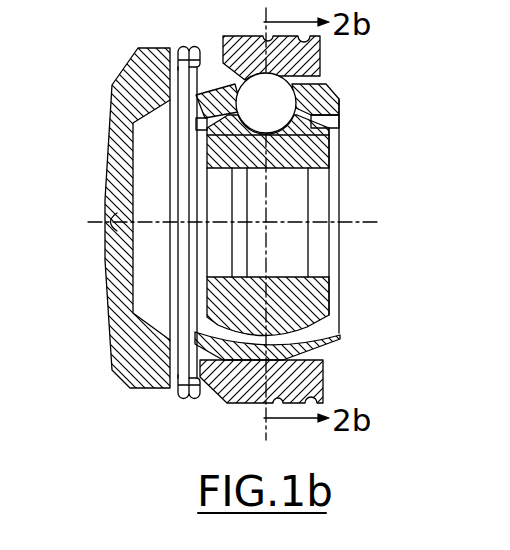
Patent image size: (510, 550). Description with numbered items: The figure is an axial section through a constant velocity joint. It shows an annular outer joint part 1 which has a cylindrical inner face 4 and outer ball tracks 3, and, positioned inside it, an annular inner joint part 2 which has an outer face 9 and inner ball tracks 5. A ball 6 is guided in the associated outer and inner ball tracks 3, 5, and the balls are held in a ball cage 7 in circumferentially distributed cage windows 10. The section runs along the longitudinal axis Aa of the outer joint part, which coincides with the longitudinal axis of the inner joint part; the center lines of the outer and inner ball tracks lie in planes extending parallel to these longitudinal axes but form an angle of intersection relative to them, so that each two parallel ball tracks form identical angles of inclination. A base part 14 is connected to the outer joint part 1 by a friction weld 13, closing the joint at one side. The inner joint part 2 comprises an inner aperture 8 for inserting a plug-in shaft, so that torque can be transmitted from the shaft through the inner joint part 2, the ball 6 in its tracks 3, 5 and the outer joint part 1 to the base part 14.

The outer joint part 1 is at (307, 62).
The inner joint part 2 is at (322, 153).
The outer ball tracks 3 is at (303, 84).
The cylindrical inner face 4 is at (307, 362).
The inner ball tracks 5 is at (312, 129).
The ball 6 is at (253, 90).
The ball cage 7 is at (248, 110).
The inner aperture 8 is at (232, 151).
The outer face 9 is at (331, 342).
The cage windows 10 is at (218, 68).
The friction weld 13 is at (187, 399).
The base part 14 is at (143, 364).
The longitudinal axis of the outer joint part Aa is at (220, 221).